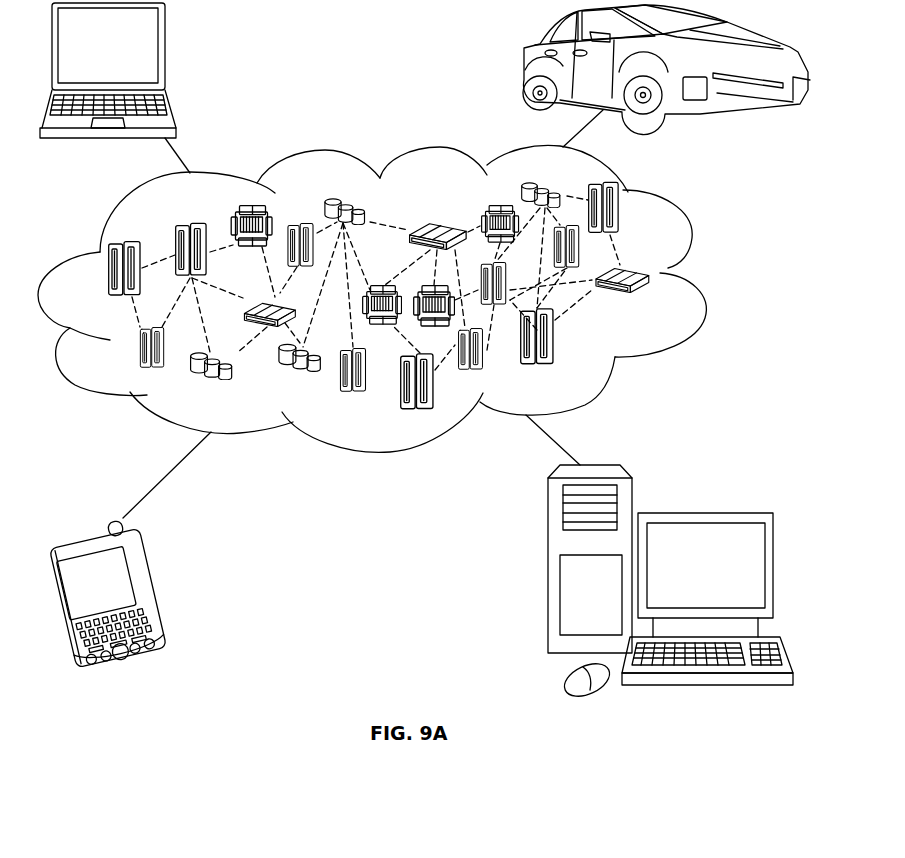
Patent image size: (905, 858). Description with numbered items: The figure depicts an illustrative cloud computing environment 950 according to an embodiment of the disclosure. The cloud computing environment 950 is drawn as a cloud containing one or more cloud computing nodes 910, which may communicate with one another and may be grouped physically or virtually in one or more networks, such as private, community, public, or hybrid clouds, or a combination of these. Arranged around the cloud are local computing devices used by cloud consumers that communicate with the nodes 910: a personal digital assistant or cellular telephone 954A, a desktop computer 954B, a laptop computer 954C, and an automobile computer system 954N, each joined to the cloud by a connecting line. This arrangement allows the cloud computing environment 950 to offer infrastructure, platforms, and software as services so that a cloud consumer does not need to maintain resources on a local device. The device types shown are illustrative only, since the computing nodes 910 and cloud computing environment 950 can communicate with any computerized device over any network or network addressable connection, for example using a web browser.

The laptop computer 954C is at (166, 53).
The automobile computer system 954N is at (525, 66).
The cloud computing environment 950 is at (404, 298).
The cloud computing node 910 is at (655, 304).
The personal digital assistant (PDA) or cellular telephone 954A is at (158, 590).
The desktop computer 954B is at (703, 513).